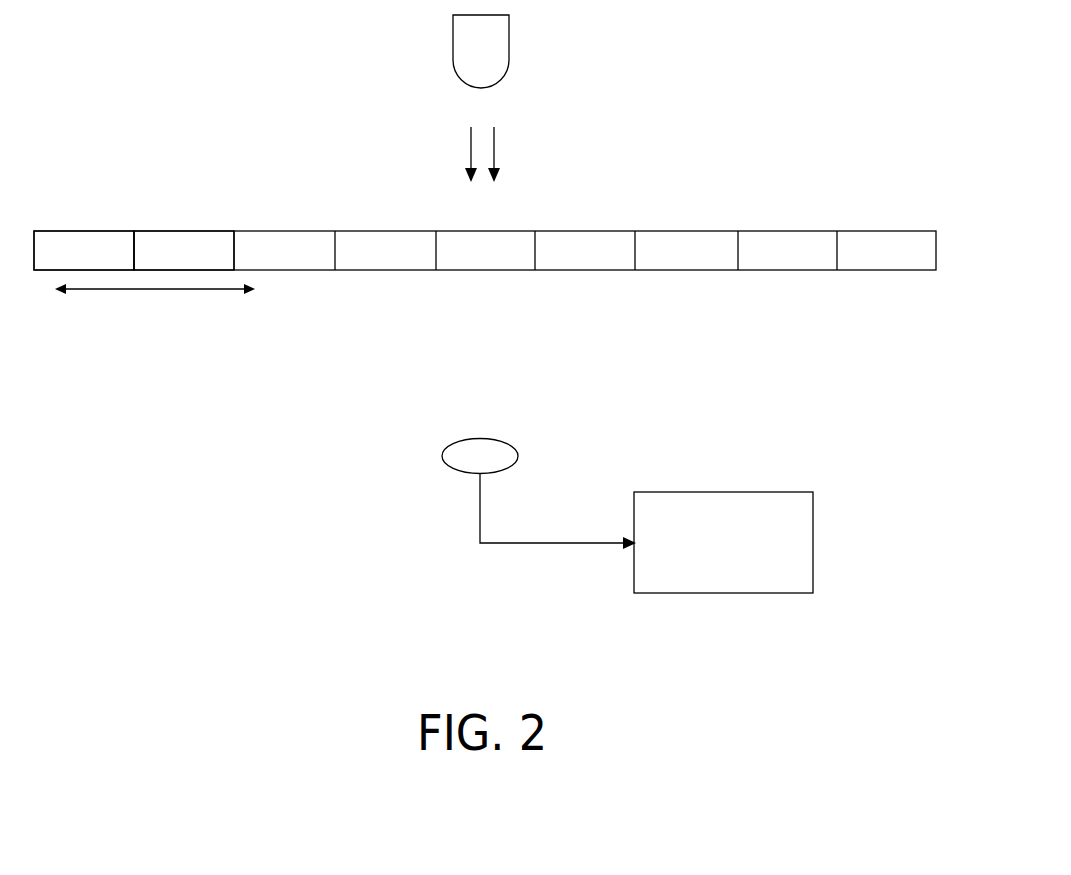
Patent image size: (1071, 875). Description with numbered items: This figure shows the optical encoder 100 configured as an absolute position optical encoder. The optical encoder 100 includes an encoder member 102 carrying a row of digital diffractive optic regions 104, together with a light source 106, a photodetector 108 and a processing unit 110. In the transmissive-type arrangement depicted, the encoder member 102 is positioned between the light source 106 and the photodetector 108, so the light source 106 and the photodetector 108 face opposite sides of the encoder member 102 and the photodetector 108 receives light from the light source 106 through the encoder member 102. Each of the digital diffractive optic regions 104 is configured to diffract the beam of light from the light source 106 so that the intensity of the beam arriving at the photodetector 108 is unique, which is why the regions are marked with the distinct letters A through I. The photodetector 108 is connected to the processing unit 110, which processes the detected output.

The optical encoder 100 is at (771, 62).
The encoder member 102 is at (792, 189).
The digital diffractive optic regions 104 is at (112, 240).
The light source 106 is at (510, 43).
The photodetector 108 is at (518, 453).
The processing unit 110 is at (778, 490).